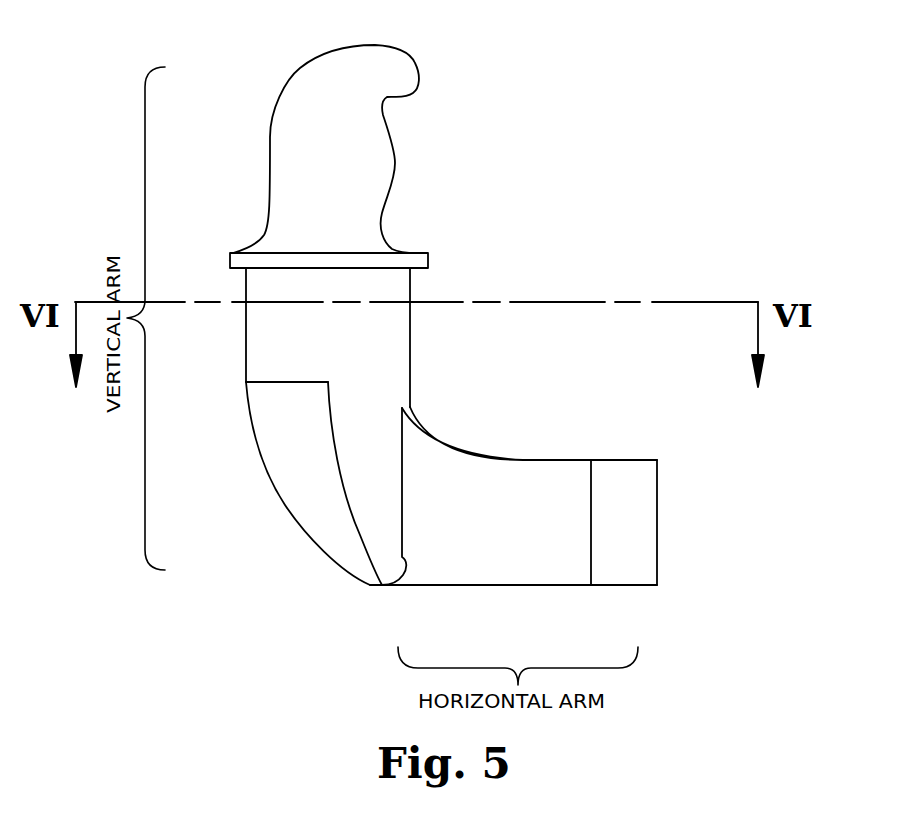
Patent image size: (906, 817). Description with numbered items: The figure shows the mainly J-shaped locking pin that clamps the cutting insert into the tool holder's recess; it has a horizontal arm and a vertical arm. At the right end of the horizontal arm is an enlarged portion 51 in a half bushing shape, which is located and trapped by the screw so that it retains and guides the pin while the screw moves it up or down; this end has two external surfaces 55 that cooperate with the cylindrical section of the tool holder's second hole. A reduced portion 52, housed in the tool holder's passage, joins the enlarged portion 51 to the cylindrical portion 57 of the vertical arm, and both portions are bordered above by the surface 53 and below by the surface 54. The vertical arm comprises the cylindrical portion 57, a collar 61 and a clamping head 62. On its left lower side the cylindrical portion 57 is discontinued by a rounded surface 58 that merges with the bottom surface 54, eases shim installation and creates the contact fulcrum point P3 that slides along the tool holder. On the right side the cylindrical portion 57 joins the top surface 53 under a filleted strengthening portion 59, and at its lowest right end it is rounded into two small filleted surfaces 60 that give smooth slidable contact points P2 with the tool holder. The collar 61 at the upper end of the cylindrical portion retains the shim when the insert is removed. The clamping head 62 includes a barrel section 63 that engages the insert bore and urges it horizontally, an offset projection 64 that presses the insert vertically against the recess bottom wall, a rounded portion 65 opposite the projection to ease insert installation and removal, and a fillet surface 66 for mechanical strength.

The enlarged portion 51 is at (671, 453).
The reduced portion 52 is at (467, 478).
The upper bordering surface 53 is at (573, 460).
The bottom surface 54 is at (613, 588).
The external surfaces 55 is at (623, 532).
The cylindrical portion 57 is at (380, 368).
The rounded surface 58 is at (292, 488).
The filleted strengthening portion 59 is at (422, 423).
The filleted surfaces 60 is at (393, 580).
The collar 61 is at (428, 258).
The clamping head 62 is at (465, 163).
The barrel section 63 is at (395, 162).
The offset projection 64 is at (418, 72).
The rounded portion 65 is at (312, 63).
The fillet surface 66 is at (262, 240).
The slidable contact points P2 is at (402, 562).
The contact fulcrum point P3 is at (247, 382).